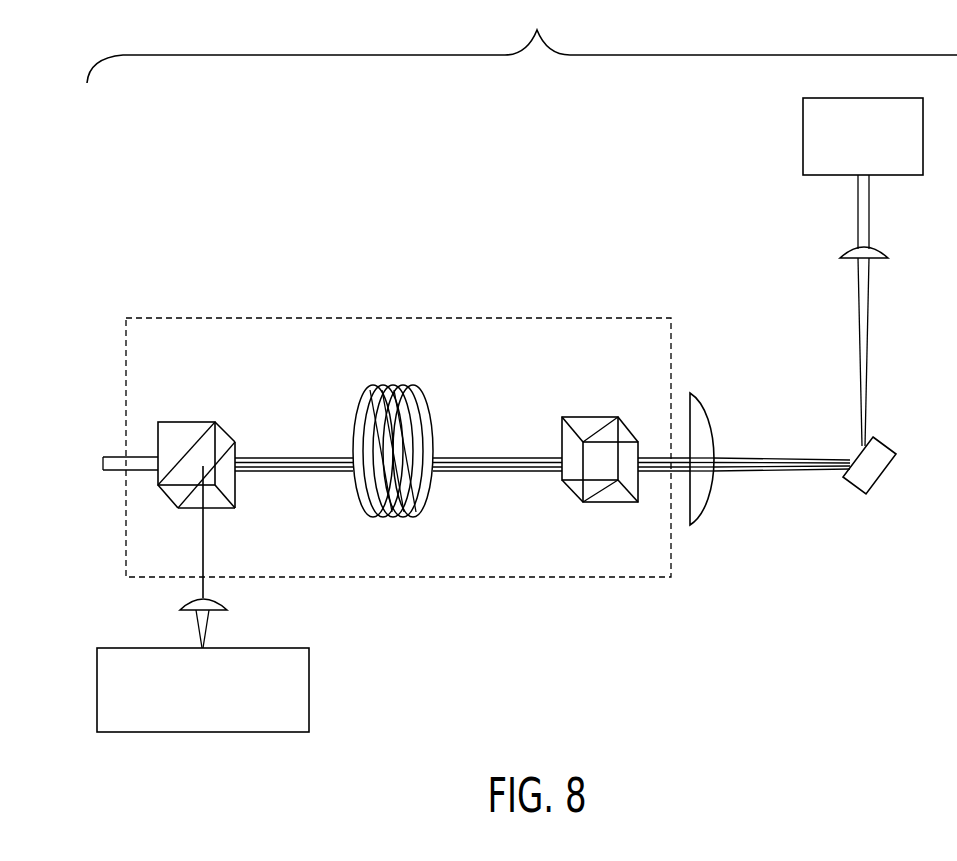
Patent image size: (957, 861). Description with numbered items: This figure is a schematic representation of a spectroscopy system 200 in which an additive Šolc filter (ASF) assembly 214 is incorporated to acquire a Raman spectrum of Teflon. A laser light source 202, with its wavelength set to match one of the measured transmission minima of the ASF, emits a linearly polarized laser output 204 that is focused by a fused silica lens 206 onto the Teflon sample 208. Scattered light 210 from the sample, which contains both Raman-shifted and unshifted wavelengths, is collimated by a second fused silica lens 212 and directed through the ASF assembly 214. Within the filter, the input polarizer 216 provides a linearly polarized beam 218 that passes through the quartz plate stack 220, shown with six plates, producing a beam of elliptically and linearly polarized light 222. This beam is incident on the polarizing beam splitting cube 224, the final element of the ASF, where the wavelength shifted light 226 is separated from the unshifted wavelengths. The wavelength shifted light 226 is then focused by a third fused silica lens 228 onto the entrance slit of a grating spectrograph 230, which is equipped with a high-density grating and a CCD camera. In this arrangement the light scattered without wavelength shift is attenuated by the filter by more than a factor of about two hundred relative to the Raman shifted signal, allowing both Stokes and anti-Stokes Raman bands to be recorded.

The spectroscopy system 200 is at (522, 41).
The laser light source 202 is at (833, 136).
The laser output 204 is at (833, 212).
The fused silica lens 206 is at (836, 240).
The Teflon sample 208 is at (873, 397).
The scattered light 210 is at (781, 435).
The second fused silica lens 212 is at (705, 488).
The ASF assembly 214 is at (398, 416).
The input polarizer 216 is at (597, 429).
The linearly polarized beam 218 is at (561, 496).
The quartz plate stack 220 is at (393, 420).
The beam of elliptically and linearly polarized light 222 is at (294, 435).
The polarizing beam splitting cube 224 is at (169, 433).
The wavelength shifted light 226 is at (232, 532).
The third fused silica lens 228 is at (231, 623).
The grating spectrograph 230 is at (233, 690).